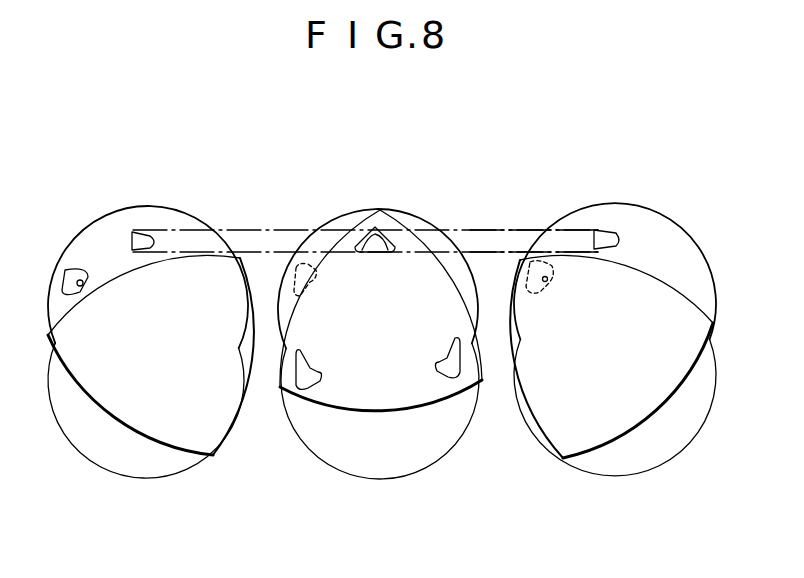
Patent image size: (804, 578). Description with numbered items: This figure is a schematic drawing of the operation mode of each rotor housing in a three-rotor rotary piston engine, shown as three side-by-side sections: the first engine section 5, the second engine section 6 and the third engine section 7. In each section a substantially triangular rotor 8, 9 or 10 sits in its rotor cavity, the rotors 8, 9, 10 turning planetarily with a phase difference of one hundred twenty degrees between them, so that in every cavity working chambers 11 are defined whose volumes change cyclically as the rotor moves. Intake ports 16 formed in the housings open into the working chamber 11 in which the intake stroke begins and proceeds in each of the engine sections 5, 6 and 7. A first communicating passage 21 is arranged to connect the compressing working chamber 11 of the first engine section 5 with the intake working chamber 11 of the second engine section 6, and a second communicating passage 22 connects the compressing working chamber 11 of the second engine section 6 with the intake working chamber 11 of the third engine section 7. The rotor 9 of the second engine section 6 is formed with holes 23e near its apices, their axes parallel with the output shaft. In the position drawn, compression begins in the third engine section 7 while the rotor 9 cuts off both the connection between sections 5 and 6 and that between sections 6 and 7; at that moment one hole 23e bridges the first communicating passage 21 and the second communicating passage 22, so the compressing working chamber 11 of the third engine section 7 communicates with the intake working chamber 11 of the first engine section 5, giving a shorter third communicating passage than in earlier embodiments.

The first engine section 5 is at (151, 395).
The second engine section 6 is at (381, 371).
The third engine section 7 is at (611, 395).
The rotor 8 is at (120, 425).
The rotor 9 is at (382, 410).
The rotor 10 is at (628, 432).
The working chamber 11 is at (112, 210).
The intake port 16 is at (82, 285).
The first communicating passage 21 is at (268, 229).
The second communicating passage 22 is at (489, 228).
The hole 23e is at (360, 235).